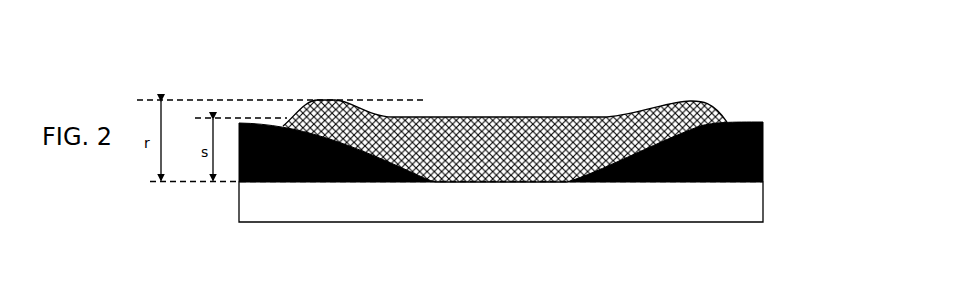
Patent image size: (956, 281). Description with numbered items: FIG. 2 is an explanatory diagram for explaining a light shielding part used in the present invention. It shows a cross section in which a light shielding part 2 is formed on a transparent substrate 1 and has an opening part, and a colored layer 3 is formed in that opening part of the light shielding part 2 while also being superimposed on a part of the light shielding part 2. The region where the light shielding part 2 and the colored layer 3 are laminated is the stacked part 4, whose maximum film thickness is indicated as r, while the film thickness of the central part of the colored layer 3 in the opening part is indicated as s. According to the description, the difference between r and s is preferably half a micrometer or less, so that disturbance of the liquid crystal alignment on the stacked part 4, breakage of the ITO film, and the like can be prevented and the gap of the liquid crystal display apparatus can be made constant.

The transparent substrate 1 is at (730, 207).
The light shielding part 2 is at (763, 158).
The colored layer 3 is at (703, 103).
The stacked part 4 is at (334, 82).